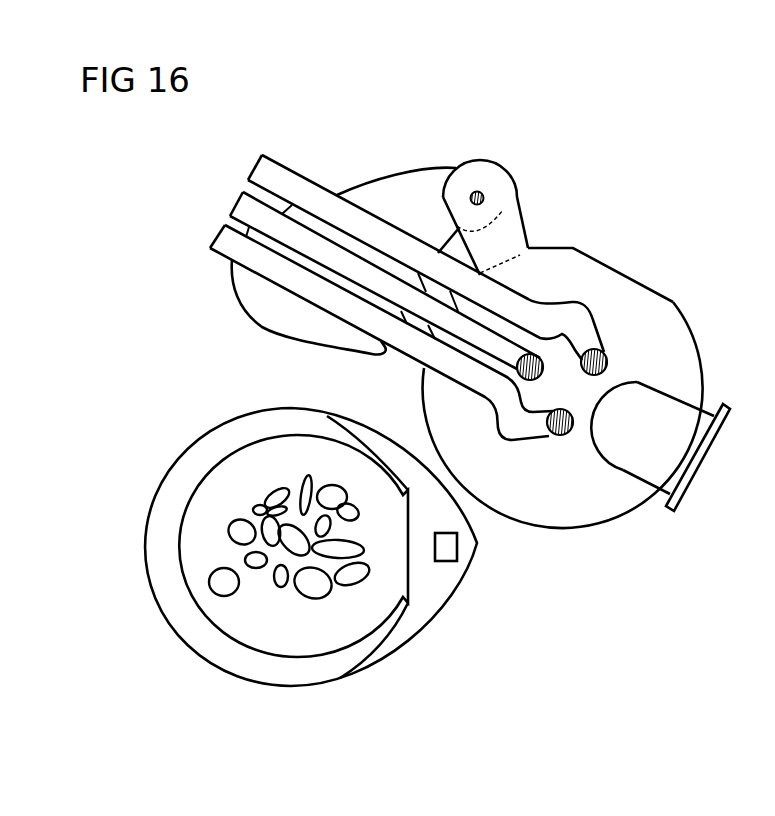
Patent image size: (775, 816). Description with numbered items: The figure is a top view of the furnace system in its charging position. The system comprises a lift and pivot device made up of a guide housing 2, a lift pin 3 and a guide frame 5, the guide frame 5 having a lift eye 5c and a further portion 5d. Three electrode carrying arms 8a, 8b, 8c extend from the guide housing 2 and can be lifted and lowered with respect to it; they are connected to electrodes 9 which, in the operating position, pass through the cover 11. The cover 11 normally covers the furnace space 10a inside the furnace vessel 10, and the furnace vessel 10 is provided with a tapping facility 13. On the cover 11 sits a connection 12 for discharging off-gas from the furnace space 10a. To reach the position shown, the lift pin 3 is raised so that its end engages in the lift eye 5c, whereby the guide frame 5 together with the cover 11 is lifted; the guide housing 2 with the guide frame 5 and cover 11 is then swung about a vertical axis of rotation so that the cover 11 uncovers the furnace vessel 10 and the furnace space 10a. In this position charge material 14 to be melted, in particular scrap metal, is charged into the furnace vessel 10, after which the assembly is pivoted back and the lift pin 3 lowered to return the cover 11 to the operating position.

The guide housing 2 is at (396, 175).
The lift pin 3 is at (477, 191).
The guide frame 5 is at (517, 215).
The lift eye 5c is at (487, 190).
The tab shoulder 5d is at (530, 250).
The electrode carrying arm 8a is at (222, 257).
The electrode carrying arm 8b is at (240, 188).
The electrode carrying arm 8c is at (293, 170).
The electrodes 9 is at (540, 357).
The furnace vessel 10 is at (382, 664).
The furnace space 10a is at (228, 618).
The cover 11 is at (607, 503).
The connection 12 is at (702, 464).
The tapping facility 13 is at (458, 546).
The charge material 14 is at (207, 583).